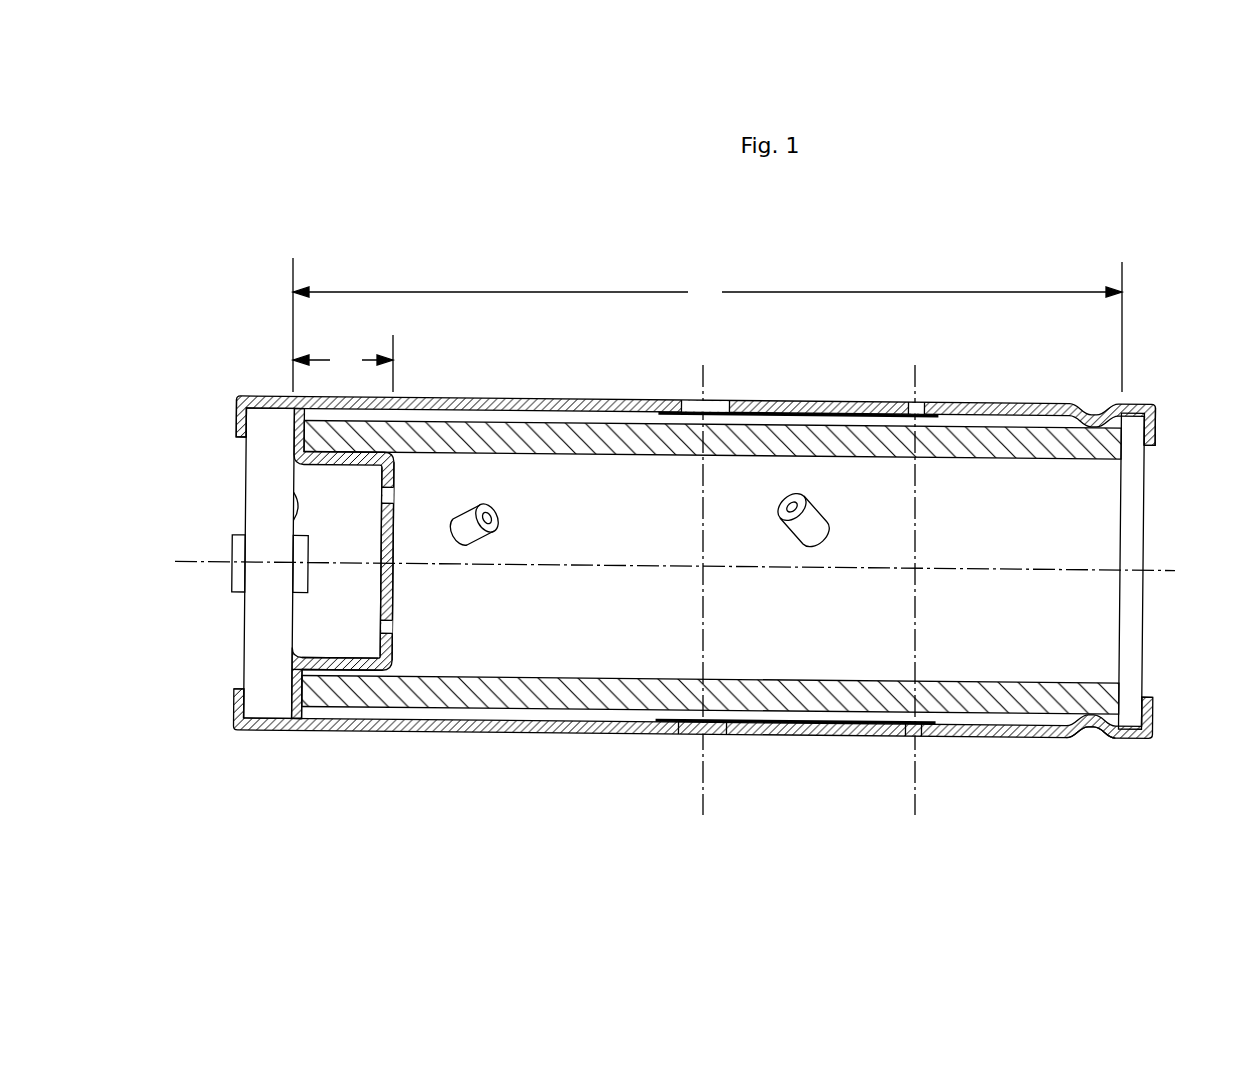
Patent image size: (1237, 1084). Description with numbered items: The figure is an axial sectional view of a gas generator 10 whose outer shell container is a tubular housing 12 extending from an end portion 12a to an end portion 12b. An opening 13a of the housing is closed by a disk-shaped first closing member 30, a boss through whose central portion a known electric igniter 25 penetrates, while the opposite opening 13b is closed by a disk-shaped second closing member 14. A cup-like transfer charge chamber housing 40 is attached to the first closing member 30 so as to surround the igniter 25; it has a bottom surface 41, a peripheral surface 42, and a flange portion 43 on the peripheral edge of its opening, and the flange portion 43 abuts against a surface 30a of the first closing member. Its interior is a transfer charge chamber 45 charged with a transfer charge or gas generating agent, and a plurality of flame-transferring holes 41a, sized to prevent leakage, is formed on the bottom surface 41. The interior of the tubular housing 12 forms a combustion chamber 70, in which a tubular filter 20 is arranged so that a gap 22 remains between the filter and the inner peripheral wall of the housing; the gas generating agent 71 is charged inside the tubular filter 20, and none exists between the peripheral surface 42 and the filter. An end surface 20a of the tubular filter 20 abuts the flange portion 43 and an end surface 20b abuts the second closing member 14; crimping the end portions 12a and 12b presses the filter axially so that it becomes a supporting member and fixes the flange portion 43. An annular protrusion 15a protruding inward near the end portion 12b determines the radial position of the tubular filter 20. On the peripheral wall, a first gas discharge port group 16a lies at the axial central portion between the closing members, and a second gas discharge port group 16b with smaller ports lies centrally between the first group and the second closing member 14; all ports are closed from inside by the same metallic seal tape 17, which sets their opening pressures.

The gas generator 10 is at (575, 390).
The tubular housing 12 is at (1011, 408).
The end portion 12a is at (240, 418).
The end portion 12b is at (1156, 430).
The opening 13a is at (243, 440).
The opening 13b is at (1150, 446).
The second closing member 14 is at (1138, 590).
The annular protrusion 15a is at (1090, 740).
The first gas discharge port group 16a is at (712, 403).
The second gas discharge port group 16b is at (917, 404).
The seal tape 17 is at (808, 420).
The tubular filter 20 is at (1012, 705).
The end surface 20a is at (290, 702).
The end surface 20b is at (1124, 696).
The gap 22 is at (968, 727).
The electric igniter 25 is at (310, 546).
The first closing member 30 is at (266, 618).
The surface 30a is at (290, 508).
The transfer charge chamber housing 40 is at (378, 596).
The bottom surface 41 is at (394, 552).
The flame-transferring holes 41a is at (395, 497).
The peripheral surface 42 is at (337, 660).
The flange portion 43 is at (304, 714).
The transfer charge chamber 45 is at (328, 515).
The combustion chamber 70 is at (652, 615).
The gas generating agent 71 is at (472, 545).